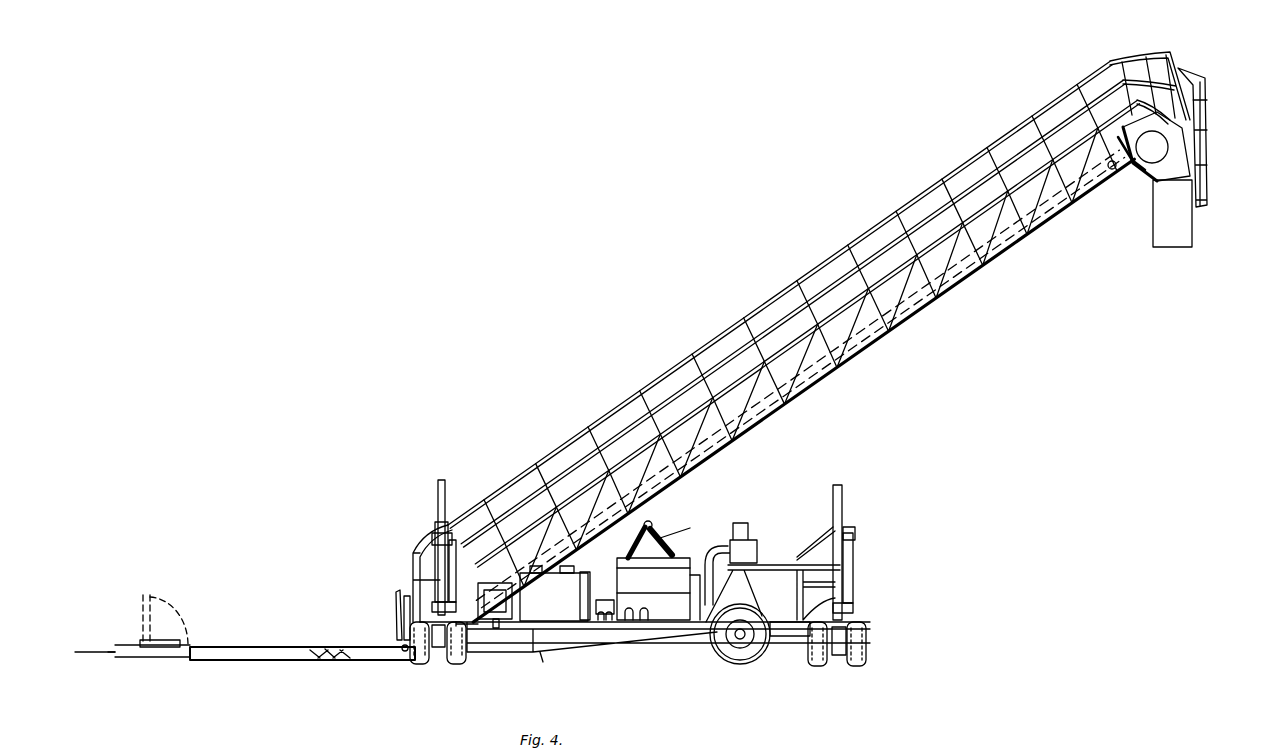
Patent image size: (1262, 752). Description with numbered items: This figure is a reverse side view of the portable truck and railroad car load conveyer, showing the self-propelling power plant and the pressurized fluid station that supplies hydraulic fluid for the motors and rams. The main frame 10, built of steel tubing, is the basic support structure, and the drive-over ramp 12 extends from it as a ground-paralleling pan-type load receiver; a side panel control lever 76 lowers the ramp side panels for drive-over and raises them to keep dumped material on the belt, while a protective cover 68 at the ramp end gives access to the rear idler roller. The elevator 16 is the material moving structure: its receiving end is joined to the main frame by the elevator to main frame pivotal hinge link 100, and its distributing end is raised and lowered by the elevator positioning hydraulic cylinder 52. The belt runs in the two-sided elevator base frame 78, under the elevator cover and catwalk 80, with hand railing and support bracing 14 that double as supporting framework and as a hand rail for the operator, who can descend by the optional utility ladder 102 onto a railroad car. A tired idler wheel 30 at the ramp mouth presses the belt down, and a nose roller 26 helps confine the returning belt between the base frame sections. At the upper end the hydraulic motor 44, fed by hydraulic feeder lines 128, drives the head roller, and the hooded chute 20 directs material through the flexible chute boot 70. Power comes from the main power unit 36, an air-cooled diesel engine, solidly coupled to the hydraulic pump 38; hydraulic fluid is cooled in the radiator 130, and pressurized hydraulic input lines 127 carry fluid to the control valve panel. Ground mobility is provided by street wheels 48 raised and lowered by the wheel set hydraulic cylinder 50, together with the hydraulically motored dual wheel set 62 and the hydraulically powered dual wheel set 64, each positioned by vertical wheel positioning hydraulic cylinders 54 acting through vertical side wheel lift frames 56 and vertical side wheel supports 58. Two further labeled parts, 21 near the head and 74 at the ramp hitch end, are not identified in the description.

The main frame 10 is at (548, 630).
The drive-over ramp 12 is at (258, 645).
The hand railing and support bracing 14 is at (805, 265).
The elevator 16 is at (1000, 290).
The hooded chute 20 is at (1150, 178).
The bracket 21 is at (1128, 165).
The nose roller 26 is at (1108, 170).
The tired idler wheel 30 is at (406, 597).
The main power unit 36 is at (655, 622).
The hydraulic pump 38 is at (603, 598).
The hydraulic motor 44 is at (1150, 130).
The street wheels 48 is at (737, 655).
The wheel set hydraulic cylinder 50 is at (790, 640).
The elevator positioning hydraulic cylinder 52 is at (668, 540).
The vertical wheel positioning hydraulic cylinders 54 is at (457, 530).
The vertical side wheel lift frames 56 is at (432, 535).
The vertical side wheel supports 58 is at (441, 482).
The hydraulically motored dual wheel set 62 is at (453, 670).
The hydraulically powered dual wheel set 64 is at (855, 660).
The protective cover 68 is at (147, 595).
The chute boot 70 is at (1168, 230).
The hitch 74 is at (108, 650).
The side panel control lever 76 is at (397, 615).
The two-sided elevator base frame 78 is at (795, 397).
The elevator cover and catwalk 80 is at (675, 395).
The elevator to main frame pivotal hinge link 100 is at (400, 652).
The utility ladder 102 is at (1196, 75).
The pressurized hydraulic input lines 127 is at (575, 625).
The hydraulic feeder lines 128 is at (840, 362).
The radiator 130 is at (490, 625).